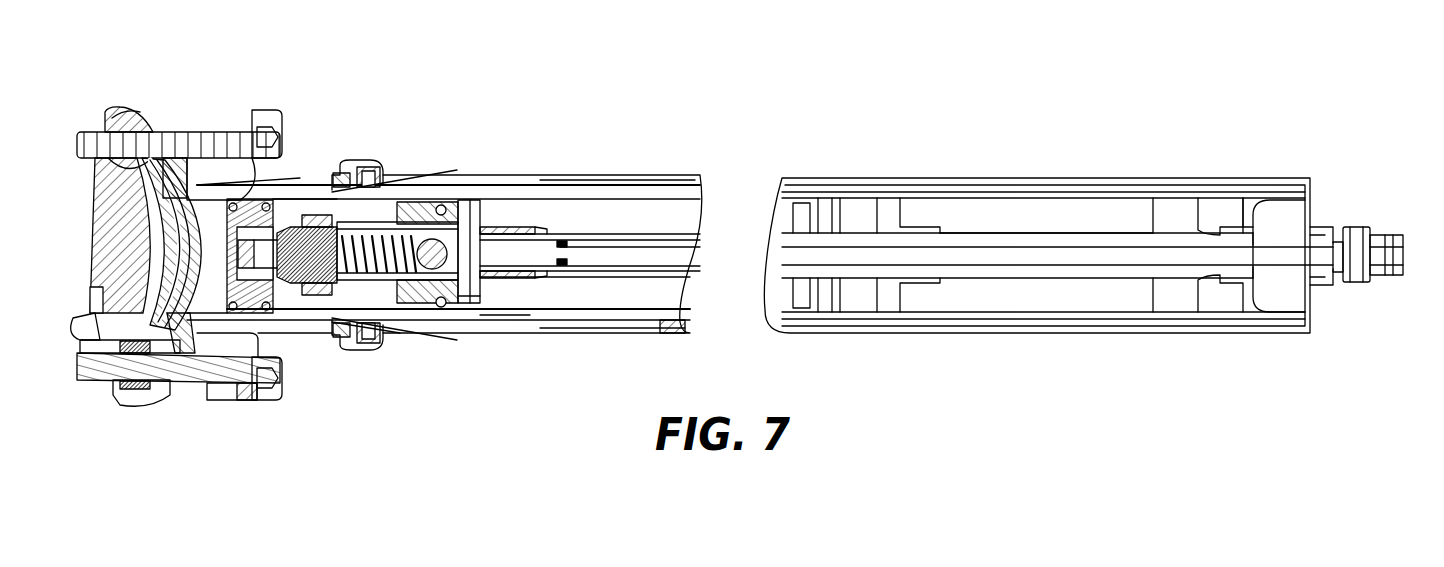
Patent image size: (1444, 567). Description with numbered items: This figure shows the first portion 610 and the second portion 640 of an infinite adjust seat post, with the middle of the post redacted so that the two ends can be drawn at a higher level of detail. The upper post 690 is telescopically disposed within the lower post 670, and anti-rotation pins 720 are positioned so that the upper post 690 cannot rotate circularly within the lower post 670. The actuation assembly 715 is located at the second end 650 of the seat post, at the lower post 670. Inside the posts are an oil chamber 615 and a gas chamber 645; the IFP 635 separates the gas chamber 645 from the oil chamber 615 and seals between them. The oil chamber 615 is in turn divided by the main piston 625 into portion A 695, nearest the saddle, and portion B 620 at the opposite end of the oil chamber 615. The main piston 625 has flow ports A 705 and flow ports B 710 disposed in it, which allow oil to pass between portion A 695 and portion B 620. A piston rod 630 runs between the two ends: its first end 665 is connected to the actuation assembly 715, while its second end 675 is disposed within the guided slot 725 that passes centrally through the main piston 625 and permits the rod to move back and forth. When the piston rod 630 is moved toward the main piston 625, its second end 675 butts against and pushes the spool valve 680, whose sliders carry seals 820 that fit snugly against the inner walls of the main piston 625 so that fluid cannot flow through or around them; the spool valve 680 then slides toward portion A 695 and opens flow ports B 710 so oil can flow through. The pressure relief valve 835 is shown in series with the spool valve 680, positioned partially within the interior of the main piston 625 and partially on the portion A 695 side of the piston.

The first portion 610 is at (272, 64).
The second portion 640 is at (822, 64).
The flow ports A 705 is at (388, 197).
The portion A 695 is at (287, 217).
The seals 820 is at (410, 207).
The main piston 625 is at (452, 197).
The flow ports B 710 is at (470, 200).
The portion B 620 is at (635, 246).
The second end of the piston rod 675 is at (467, 300).
The upper post 690 is at (533, 320).
The guided slot 725 is at (452, 313).
The spool valve 680 is at (440, 300).
The pressure relief valve 835 is at (332, 340).
The oil chamber 615 is at (800, 215).
The IFP 635 is at (906, 190).
The gas chamber 645 is at (1108, 198).
The second end 650 is at (1312, 168).
The actuation assembly 715 is at (1358, 208).
The first end of the piston rod 665 is at (1283, 258).
The piston rod 630 is at (820, 255).
The lower post 670 is at (1005, 332).
The anti-rotation pins 720 is at (1055, 315).